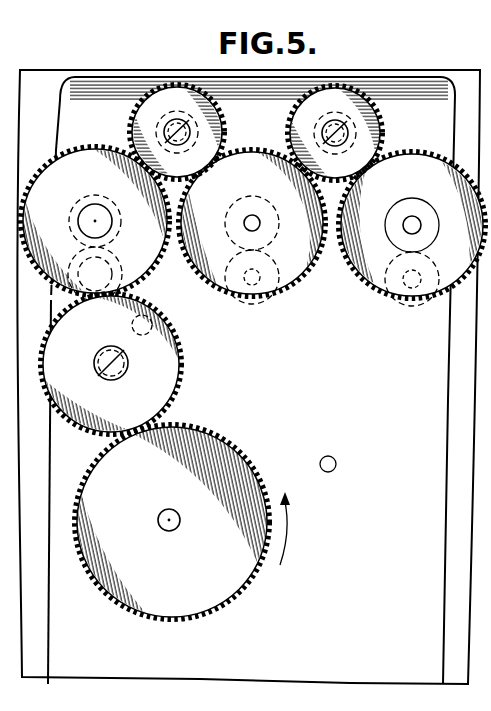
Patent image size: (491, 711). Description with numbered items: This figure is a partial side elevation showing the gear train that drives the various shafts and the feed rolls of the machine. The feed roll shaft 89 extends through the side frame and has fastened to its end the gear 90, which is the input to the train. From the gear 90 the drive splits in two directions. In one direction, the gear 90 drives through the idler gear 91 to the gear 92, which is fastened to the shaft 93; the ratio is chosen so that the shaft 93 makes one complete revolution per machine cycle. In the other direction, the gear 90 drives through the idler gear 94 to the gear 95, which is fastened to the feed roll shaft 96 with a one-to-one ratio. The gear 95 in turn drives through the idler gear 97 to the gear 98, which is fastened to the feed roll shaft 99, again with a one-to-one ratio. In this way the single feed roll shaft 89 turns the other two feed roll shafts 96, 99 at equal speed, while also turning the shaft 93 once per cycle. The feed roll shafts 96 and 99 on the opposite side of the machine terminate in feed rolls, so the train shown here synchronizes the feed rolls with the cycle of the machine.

The feed roll shaft 89 is at (94, 213).
The gear 90 is at (47, 177).
The idler gear 91 is at (167, 362).
The gear 92 is at (218, 456).
The shaft 93 is at (168, 531).
The idler gear 94 is at (147, 108).
The gear 95 is at (212, 250).
The feed roll shaft 96 is at (258, 230).
The idler gear 97 is at (382, 123).
The gear 98 is at (425, 168).
The feed roll shaft 99 is at (407, 231).